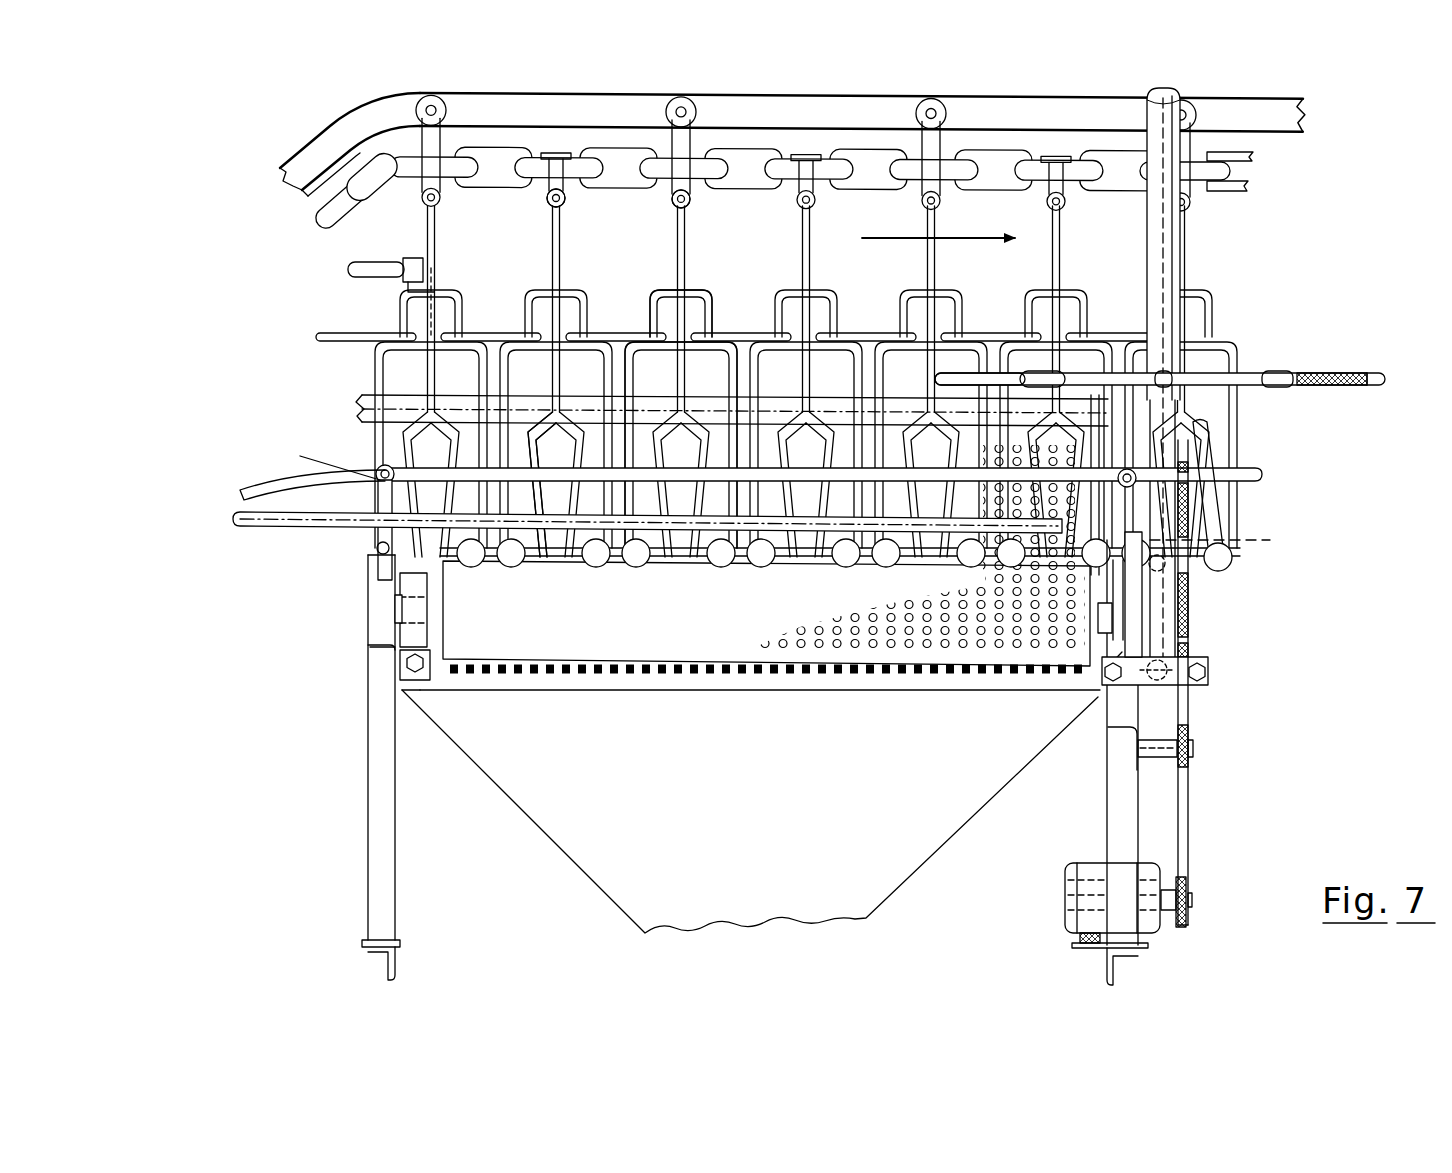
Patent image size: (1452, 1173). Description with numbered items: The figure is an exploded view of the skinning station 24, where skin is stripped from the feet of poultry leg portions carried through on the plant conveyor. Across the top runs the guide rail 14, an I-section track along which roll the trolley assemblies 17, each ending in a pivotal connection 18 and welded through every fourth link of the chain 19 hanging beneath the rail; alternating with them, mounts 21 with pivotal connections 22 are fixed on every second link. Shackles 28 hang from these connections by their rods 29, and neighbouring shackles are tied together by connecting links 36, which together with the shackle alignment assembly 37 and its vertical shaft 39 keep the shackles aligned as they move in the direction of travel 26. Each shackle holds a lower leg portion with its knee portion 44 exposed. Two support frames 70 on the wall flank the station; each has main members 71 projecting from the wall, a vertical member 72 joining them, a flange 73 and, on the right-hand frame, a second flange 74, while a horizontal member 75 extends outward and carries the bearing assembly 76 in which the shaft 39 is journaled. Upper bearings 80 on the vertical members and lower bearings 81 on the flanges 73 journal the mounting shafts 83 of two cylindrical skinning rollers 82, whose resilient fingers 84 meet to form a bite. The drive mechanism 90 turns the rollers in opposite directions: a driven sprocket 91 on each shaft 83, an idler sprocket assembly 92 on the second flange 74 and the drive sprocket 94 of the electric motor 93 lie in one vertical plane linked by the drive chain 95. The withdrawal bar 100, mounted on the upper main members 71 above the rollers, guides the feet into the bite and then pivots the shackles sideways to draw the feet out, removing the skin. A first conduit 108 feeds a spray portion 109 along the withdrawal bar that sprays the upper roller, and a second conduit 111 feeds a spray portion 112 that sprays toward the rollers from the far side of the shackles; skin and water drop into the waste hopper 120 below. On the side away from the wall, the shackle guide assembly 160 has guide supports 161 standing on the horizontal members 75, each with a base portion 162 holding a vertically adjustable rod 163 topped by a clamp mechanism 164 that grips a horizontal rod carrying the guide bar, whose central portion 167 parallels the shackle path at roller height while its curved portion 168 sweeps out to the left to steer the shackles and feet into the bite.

The guide rail 14 is at (572, 98).
The trolley assembly 17 is at (702, 108).
The pivotal connection 18 is at (673, 202).
The chain 19 is at (750, 144).
The mount 21 is at (806, 152).
The pivotal connection 22 is at (548, 201).
The skinning station 24 is at (494, 838).
The direction of travel 26 is at (900, 240).
The shackle 28 is at (699, 279).
The rod 29 is at (675, 255).
The connecting link 36 is at (616, 340).
The shackle alignment assembly 37 is at (1334, 355).
The shaft 39 is at (1170, 271).
The knee portion 44 is at (509, 561).
The support frame 70 is at (366, 729).
The main member 71 is at (394, 961).
The vertical member 72 is at (370, 801).
The flange 73 is at (416, 696).
The second flange 74 is at (1138, 763).
The horizontal member 75 is at (396, 671).
The bearing assembly 76 is at (1166, 678).
The upper bearings 80 is at (383, 466).
The lower bearings 81 is at (410, 623).
The skinning roller 82 is at (766, 504).
The mounting shaft 83 is at (394, 494).
The resilient finger 84 is at (854, 672).
The drive mechanism 90 is at (1194, 827).
The driven sprocket 91 is at (1192, 471).
The idler sprocket assembly 92 is at (1190, 746).
The electric motor 93 is at (1068, 881).
The drive sprocket 94 is at (1189, 919).
The drive chain 95 is at (1190, 791).
The withdrawal bar 100 is at (893, 400).
The first conduit 108 is at (381, 262).
The spray portion 109 is at (712, 424).
The second conduit 111 is at (233, 519).
The spray portion 112 is at (810, 528).
The waste hopper 120 is at (760, 847).
The shackle guide assembly 160 is at (370, 569).
The guide support 161 is at (380, 553).
The base portion 162 is at (382, 641).
The rod 163 is at (1237, 420).
The clamp mechanism 164 is at (379, 469).
The central portion 167 is at (558, 470).
The curved portion 168 is at (245, 486).